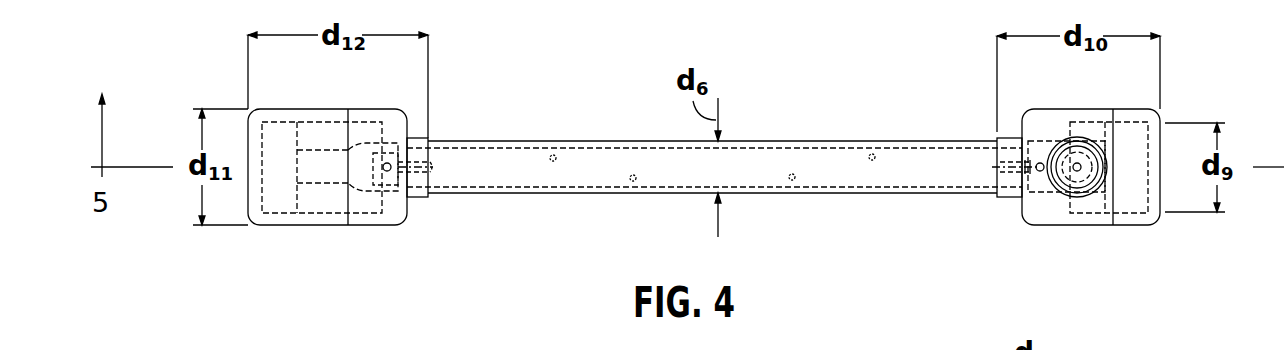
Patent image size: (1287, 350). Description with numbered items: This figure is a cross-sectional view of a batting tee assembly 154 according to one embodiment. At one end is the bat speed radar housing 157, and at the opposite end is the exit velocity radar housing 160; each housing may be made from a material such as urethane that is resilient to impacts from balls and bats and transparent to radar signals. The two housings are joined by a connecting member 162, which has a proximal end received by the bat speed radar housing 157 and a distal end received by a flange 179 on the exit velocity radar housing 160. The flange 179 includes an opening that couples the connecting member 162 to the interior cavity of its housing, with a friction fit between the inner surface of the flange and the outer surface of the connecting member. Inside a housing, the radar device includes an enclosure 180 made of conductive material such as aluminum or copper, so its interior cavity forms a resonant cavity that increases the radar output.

The batting tee assembly 154 is at (810, 122).
The bat speed radar housing 157 is at (1056, 219).
The exit velocity radar housing 160 is at (318, 219).
The connecting member 162 is at (834, 191).
The flange 179 is at (1136, 124).
The enclosure 180 is at (315, 123).